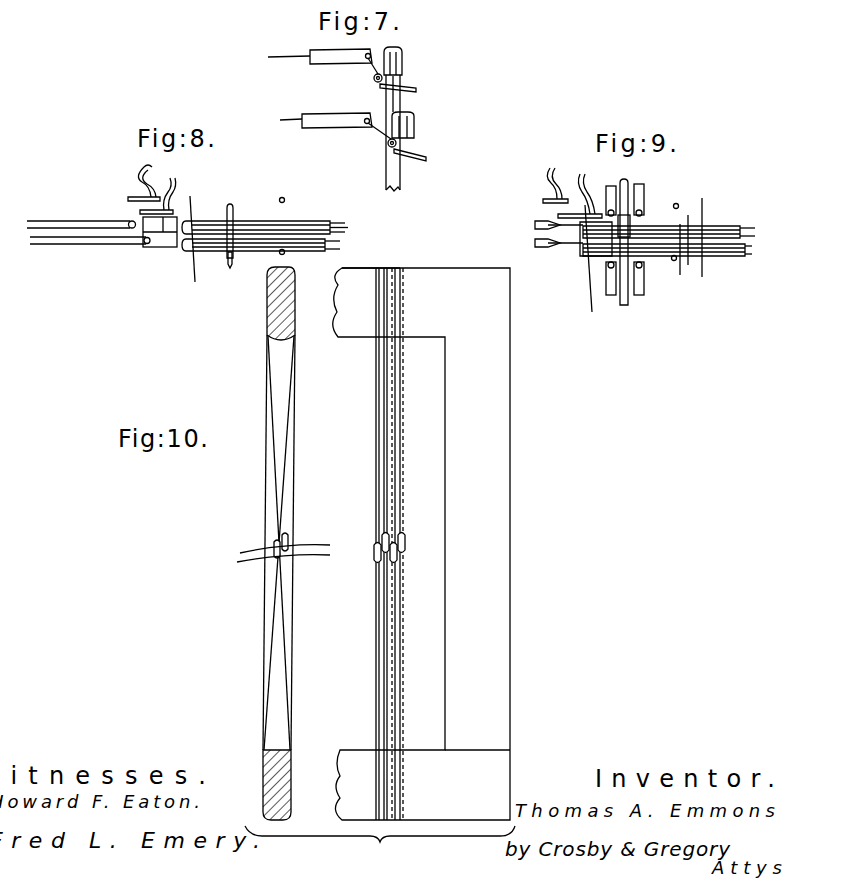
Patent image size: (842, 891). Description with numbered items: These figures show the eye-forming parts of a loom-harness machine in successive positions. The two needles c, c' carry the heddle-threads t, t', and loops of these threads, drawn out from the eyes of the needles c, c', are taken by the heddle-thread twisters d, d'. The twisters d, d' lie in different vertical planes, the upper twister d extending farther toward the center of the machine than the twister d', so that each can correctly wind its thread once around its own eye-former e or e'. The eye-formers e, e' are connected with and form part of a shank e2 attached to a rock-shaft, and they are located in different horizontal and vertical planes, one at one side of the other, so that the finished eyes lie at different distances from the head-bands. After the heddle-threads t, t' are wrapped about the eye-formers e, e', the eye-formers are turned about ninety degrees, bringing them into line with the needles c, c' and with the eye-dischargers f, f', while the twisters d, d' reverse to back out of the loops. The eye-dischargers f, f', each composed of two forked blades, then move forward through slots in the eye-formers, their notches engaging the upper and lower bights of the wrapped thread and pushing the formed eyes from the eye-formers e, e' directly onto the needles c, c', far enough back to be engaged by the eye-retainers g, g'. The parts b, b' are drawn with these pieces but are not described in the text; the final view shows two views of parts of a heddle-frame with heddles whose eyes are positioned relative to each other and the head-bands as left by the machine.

In FIG. 7, the needle c is at (320, 67).
In FIG. 8, the needle c is at (234, 249).
In FIG. 9, the needle c is at (592, 258).
In FIG. 7, the needle c' is at (326, 131).
In FIG. 8, the needle c' is at (256, 211).
In FIG. 9, the needle c' is at (664, 218).
In FIG. 7, the heddle-thread twister d is at (404, 77).
In FIG. 8, the heddle-thread twister d is at (138, 198).
In FIG. 9, the heddle-thread twister d is at (583, 196).
In FIG. 7, the heddle-thread twister d' is at (413, 142).
In FIG. 8, the heddle-thread twister d' is at (128, 183).
In FIG. 9, the heddle-thread twister d' is at (544, 185).
In FIG. 7, the eye-former e is at (407, 57).
In FIG. 8, the eye-former e is at (182, 236).
In FIG. 7, the eye-former e' is at (420, 125).
In FIG. 7, the shank e2 is at (395, 192).
In FIG. 8, the eye-discharger f is at (90, 253).
In FIG. 9, the eye-discharger f is at (544, 249).
In FIG. 8, the eye-discharger f' is at (81, 217).
In FIG. 9, the eye-discharger f' is at (544, 225).
In FIG. 8, the eye-retainer g is at (295, 259).
In FIG. 9, the eye-retainer g is at (674, 278).
In FIG. 8, the eye-retainer g' is at (298, 191).
In FIG. 9, the eye-retainer g' is at (690, 227).
In FIG. 8, the stud b is at (235, 269).
In FIG. 9, the stud b is at (625, 294).
In FIG. 8, the pivot pin b' is at (245, 220).
In FIG. 9, the pivot pin b' is at (625, 231).
In FIG. 8, the heddle-thread t is at (338, 247).
In FIG. 9, the heddle-thread t is at (747, 264).
In FIG. 8, the heddle-thread t' is at (345, 222).
In FIG. 9, the heddle-thread t' is at (755, 225).